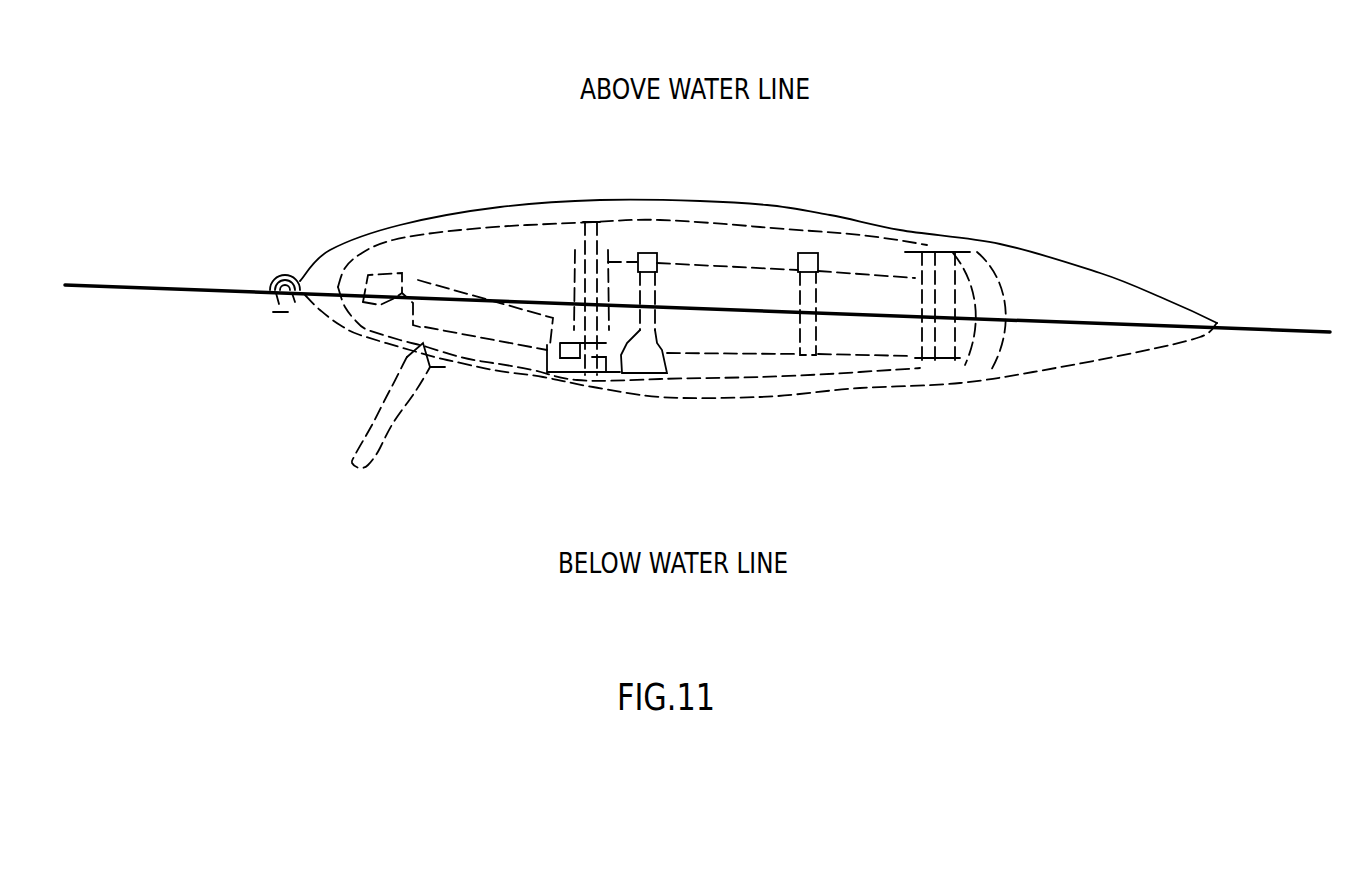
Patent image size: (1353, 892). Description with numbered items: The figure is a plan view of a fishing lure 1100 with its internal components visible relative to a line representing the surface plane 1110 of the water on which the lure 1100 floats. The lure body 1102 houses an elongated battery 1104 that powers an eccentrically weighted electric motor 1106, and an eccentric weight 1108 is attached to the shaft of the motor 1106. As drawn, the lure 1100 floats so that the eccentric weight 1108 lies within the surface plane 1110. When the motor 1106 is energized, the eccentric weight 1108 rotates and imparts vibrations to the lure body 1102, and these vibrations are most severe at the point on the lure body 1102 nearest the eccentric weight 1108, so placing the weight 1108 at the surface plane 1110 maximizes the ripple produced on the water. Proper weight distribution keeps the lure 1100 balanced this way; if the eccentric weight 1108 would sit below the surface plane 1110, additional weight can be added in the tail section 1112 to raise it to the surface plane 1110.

The fishing lure 1100 is at (973, 478).
The lure body 1102 is at (770, 385).
The elongated battery 1104 is at (750, 277).
The eccentrically weighted electric motor 1106 is at (500, 332).
The eccentric weight 1108 is at (390, 300).
The surface plane 1110 is at (135, 285).
The tail section 1112 is at (1050, 283).